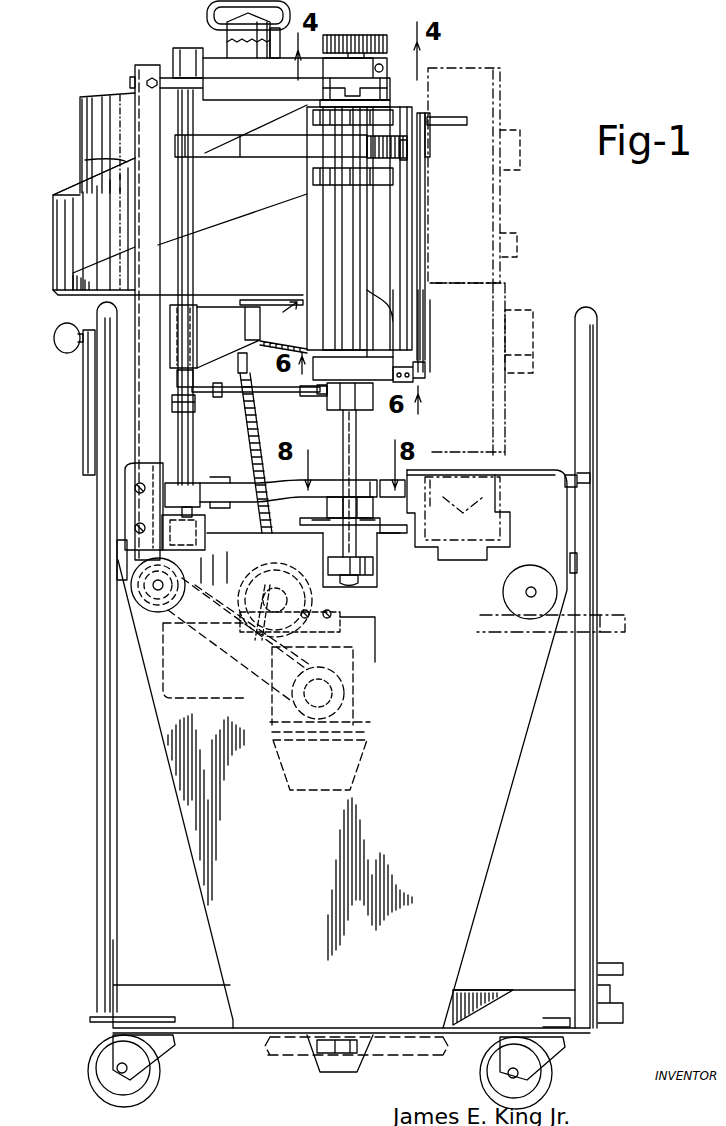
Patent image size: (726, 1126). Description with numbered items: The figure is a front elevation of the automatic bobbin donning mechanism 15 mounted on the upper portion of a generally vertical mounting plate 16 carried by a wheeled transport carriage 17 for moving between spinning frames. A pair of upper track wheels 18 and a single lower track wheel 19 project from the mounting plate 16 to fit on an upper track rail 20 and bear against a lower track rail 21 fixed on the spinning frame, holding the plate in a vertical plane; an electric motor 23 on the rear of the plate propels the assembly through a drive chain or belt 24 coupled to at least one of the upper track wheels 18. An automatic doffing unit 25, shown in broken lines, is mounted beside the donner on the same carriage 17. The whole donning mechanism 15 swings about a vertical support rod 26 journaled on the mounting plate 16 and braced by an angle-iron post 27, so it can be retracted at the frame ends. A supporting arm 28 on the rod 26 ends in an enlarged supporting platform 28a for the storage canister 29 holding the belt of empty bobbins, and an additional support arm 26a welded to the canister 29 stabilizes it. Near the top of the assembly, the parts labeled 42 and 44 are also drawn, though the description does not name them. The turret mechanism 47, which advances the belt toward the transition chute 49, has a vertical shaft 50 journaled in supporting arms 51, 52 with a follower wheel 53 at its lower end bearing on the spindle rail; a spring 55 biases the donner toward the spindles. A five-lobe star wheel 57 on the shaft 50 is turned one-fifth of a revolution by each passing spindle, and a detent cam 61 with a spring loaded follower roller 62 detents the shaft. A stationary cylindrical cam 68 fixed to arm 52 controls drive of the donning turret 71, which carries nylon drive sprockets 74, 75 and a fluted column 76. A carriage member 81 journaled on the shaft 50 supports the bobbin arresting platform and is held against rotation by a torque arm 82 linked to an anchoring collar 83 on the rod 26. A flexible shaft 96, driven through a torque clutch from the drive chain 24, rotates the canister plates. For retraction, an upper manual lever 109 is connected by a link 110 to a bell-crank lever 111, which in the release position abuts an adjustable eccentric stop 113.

The automatic bobbin donning mechanism 15 is at (119, 80).
The mounting plate 16 is at (493, 862).
The wheeled transport carriage 17 is at (606, 404).
The upper track wheels 18 is at (140, 597).
The lower track wheel 19 is at (350, 1040).
The upper track rail 20 is at (615, 615).
The lower track rail 21 is at (395, 1057).
The electric motor 23 is at (367, 712).
The drive chain or belt 24 is at (220, 650).
The automatic doffing unit 25 is at (500, 205).
The vertical support rod 26 is at (195, 190).
The additional support arm 26a is at (237, 122).
The angle-iron post 27 is at (150, 222).
The supporting arm 28 is at (232, 333).
The supporting platform 28a is at (262, 360).
The storage canister 29 is at (80, 118).
The top arm 42 is at (227, 48).
The handle 44 is at (207, 11).
The turret mechanism 47 is at (295, 236).
The transition chute 49 is at (128, 163).
The vertical shaft 50 is at (343, 436).
The supporting arm 51 is at (212, 483).
The supporting arm 52 is at (280, 62).
The follower wheel 53 is at (377, 567).
The spring 55 is at (270, 358).
The five-lobe star wheel 57 is at (410, 528).
The detent cam 61 is at (390, 505).
The follower roller 62 is at (308, 502).
The stationary cylindrical cam 68 is at (323, 85).
The donning turret 71 is at (310, 276).
The drive sprocket 74 is at (313, 125).
The drive sprocket 75 is at (313, 175).
The fluted column 76 is at (335, 252).
The carriage member 81 is at (373, 405).
The torque arm 82 is at (305, 396).
The anchoring collar 83 is at (195, 410).
The flexible shaft 96 is at (252, 428).
The upper manual lever 109 is at (470, 100).
The link 110 is at (425, 185).
The bell-crank lever 111 is at (430, 318).
The adjustable eccentric stop 113 is at (425, 358).